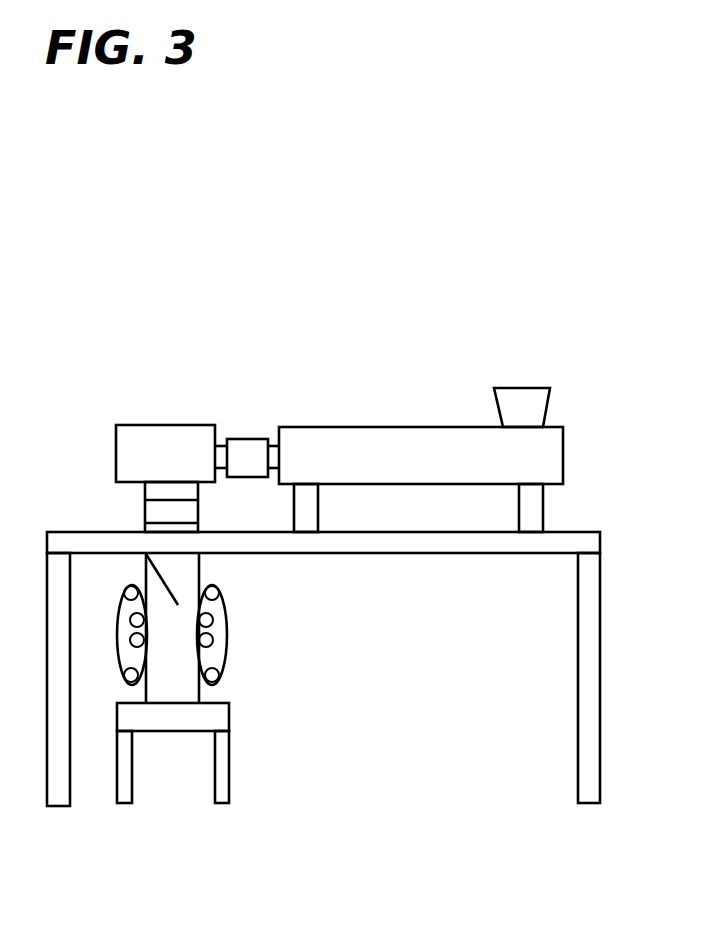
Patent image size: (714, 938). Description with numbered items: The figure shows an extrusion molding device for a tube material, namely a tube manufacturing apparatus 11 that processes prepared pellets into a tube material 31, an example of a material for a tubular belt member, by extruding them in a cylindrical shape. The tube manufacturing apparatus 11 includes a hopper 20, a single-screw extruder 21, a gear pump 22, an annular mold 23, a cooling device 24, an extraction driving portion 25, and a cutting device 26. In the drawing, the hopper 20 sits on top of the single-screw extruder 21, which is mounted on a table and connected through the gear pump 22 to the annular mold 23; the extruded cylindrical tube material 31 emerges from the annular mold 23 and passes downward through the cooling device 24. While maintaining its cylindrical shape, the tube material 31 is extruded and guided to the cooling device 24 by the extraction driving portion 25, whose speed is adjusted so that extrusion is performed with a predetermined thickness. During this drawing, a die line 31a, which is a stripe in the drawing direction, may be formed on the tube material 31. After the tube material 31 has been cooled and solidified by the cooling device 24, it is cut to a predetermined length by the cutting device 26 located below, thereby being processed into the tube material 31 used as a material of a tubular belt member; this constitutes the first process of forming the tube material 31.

The tube manufacturing apparatus 11 is at (420, 316).
The hopper 20 is at (514, 392).
The single-screw extruder 21 is at (336, 432).
The gear pump 22 is at (245, 448).
The annular mold 23 is at (165, 430).
The cooling device 24 is at (148, 513).
The extraction driving portion 25 is at (228, 630).
The cutting device 26 is at (229, 716).
The tube material 31 is at (199, 577).
The die line 31a is at (152, 578).